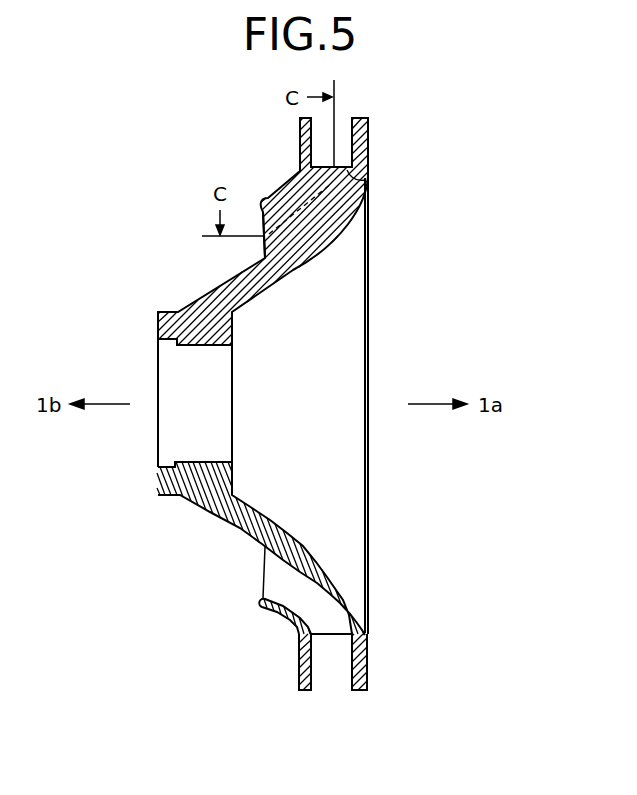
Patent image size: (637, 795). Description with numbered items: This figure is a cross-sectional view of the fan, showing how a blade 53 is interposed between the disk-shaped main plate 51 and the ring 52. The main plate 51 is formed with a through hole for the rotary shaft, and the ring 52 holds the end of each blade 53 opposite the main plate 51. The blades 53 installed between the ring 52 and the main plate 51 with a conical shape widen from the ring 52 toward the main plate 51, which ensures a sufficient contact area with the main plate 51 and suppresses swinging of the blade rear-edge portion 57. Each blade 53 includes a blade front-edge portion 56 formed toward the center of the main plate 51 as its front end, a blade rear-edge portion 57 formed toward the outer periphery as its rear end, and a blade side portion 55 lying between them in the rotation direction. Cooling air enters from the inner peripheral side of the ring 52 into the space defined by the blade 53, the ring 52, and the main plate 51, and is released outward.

The main plate 51 is at (367, 143).
The ring 52 is at (302, 151).
The blade 53 is at (322, 220).
The blade side portion 55 is at (315, 595).
The blade front-edge portion 56 is at (265, 250).
The blade rear-edge portion 57 is at (348, 178).